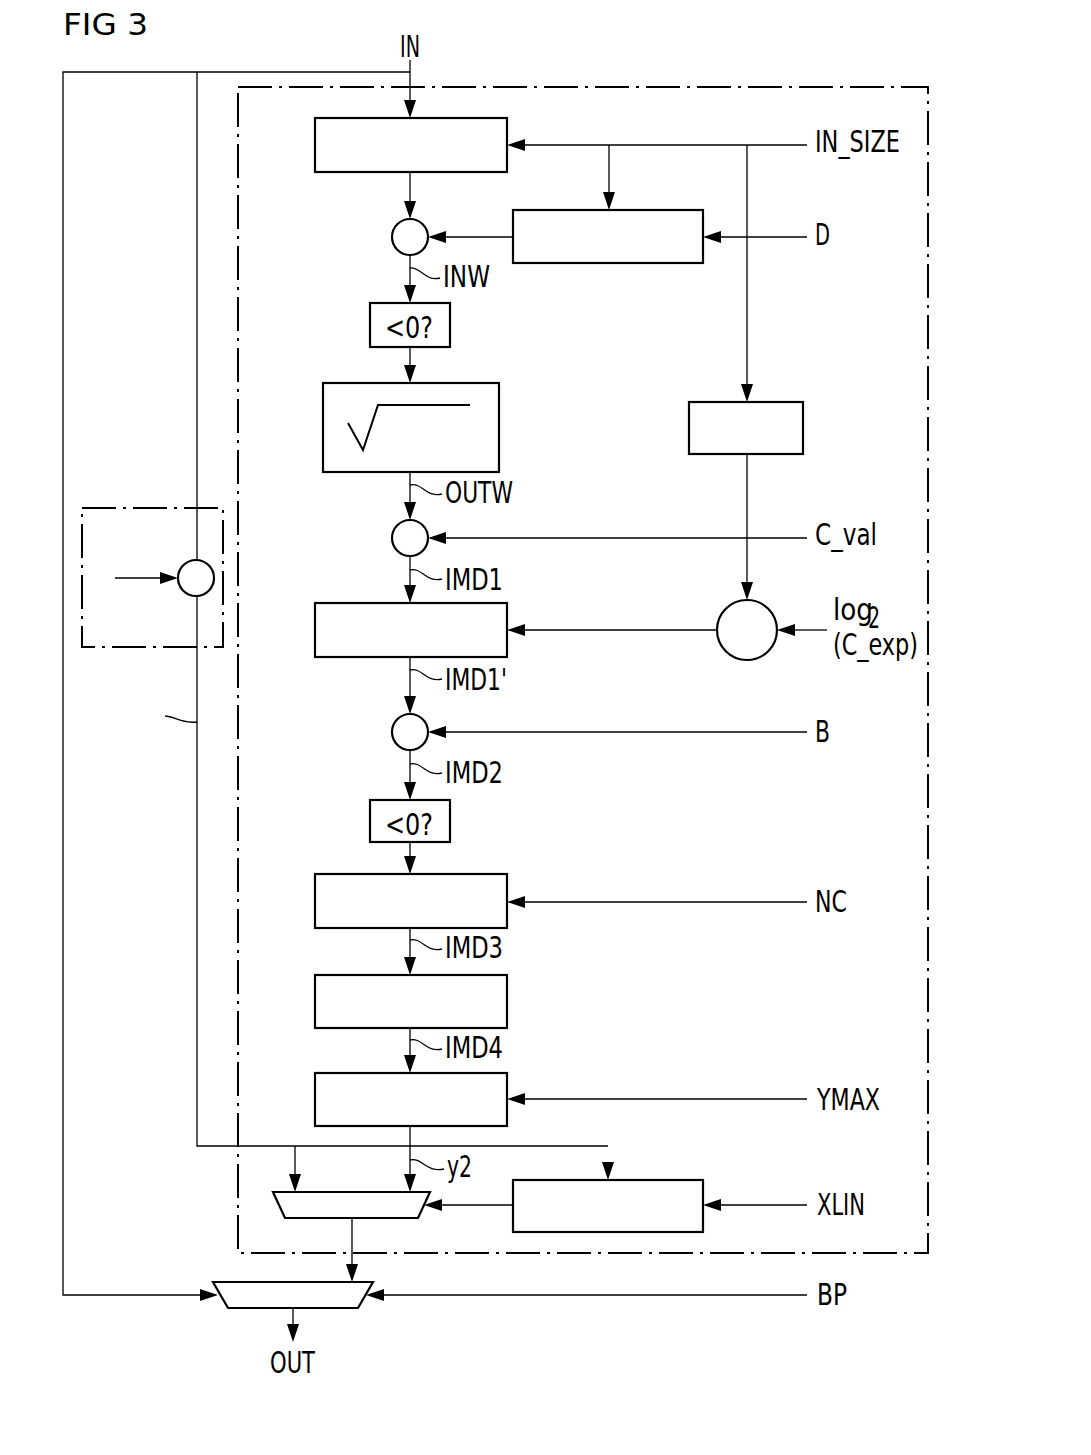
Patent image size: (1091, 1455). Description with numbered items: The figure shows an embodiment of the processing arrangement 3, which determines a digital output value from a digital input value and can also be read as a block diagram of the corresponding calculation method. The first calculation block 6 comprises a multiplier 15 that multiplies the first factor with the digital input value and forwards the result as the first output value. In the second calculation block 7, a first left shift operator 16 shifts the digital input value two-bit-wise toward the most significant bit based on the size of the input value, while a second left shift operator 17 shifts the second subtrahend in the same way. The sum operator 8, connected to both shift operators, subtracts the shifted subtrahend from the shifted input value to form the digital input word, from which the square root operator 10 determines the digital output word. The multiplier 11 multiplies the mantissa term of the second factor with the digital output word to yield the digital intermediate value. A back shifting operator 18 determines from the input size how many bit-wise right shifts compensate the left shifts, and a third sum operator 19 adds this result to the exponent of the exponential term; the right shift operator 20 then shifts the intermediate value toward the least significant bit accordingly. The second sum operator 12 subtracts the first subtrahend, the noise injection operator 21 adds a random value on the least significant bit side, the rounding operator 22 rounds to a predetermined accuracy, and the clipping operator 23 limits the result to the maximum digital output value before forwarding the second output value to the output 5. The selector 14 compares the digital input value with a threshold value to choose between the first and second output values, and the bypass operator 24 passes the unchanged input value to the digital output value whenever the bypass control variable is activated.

The processing arrangement 3 is at (825, 67).
The output 5 is at (420, 1214).
The first calculation block 6 is at (152, 508).
The second calculation block 7 is at (583, 86).
The sum operator 8 is at (392, 240).
The square root operator 10 is at (499, 428).
The multiplier 11 is at (392, 540).
The second sum operator 12 is at (392, 735).
The selector 14 is at (667, 1180).
The multiplier 15 is at (182, 566).
The first left shift operator 16 is at (315, 150).
The second left shift operator 17 is at (608, 264).
The back shifting operator 18 is at (689, 428).
The third sum operator 19 is at (722, 613).
The right shift operator 20 is at (315, 636).
The noise injection operator 21 is at (315, 906).
The rounding operator 22 is at (315, 1006).
The clipping operator 23 is at (315, 1105).
The bypass operator 24 is at (330, 1310).